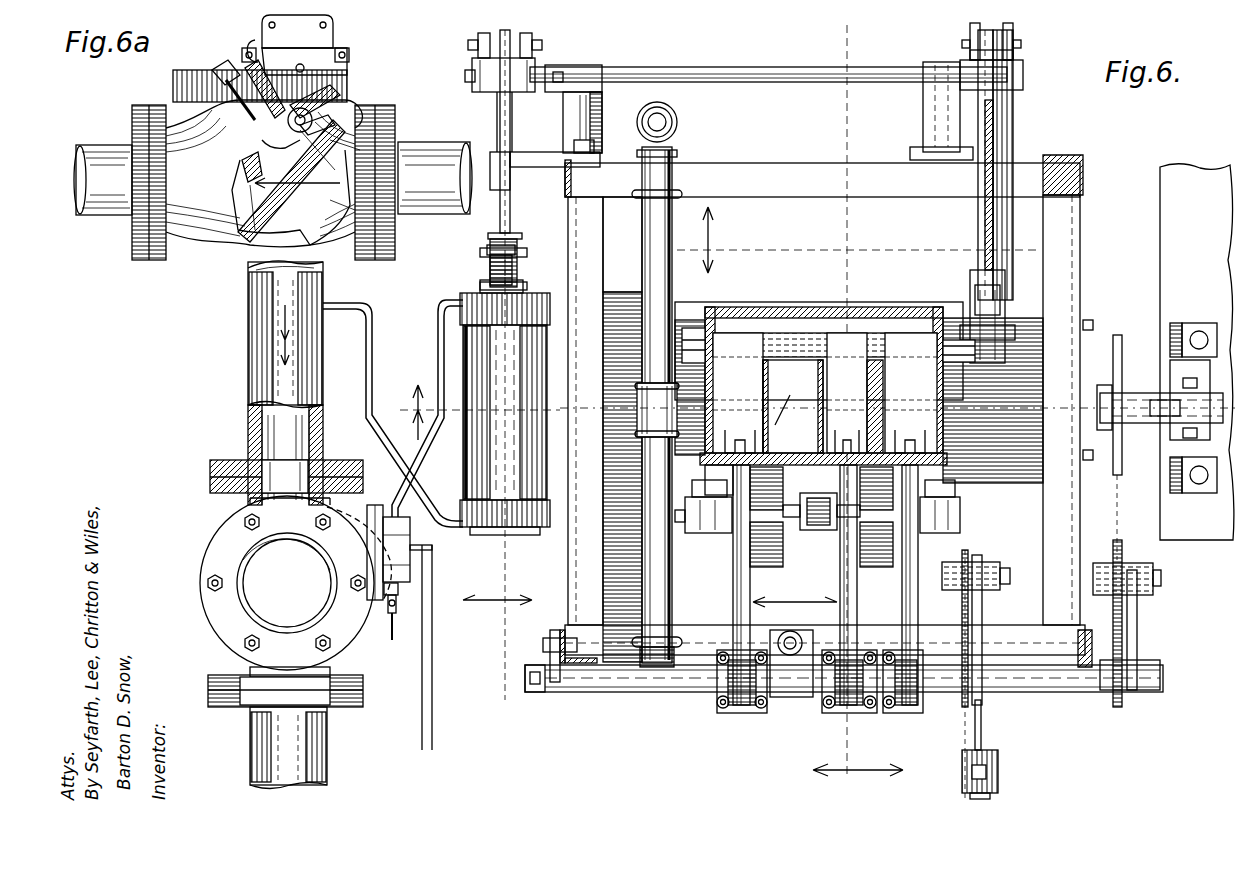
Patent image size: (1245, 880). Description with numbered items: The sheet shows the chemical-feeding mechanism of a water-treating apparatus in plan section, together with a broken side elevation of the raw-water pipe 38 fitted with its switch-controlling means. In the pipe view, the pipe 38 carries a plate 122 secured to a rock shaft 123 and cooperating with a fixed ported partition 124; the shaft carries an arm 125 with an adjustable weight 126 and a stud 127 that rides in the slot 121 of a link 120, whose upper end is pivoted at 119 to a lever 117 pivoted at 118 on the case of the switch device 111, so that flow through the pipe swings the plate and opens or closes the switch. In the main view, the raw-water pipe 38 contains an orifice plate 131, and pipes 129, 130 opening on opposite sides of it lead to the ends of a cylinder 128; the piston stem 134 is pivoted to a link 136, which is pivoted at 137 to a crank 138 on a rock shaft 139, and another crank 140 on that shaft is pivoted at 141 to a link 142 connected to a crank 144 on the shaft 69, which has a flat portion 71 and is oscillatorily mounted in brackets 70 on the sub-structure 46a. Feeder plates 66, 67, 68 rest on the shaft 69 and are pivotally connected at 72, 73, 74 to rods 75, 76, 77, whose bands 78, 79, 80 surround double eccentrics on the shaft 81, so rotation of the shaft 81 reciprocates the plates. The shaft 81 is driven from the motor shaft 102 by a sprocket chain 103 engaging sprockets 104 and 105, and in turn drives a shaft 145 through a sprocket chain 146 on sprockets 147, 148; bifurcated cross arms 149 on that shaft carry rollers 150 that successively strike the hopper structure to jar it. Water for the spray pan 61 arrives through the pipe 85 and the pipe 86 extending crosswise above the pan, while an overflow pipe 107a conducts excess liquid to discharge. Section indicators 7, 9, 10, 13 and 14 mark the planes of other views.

In FIG. 6a, the pipe 38 is at (428, 152).
In FIG. 6, the pipe 38 is at (262, 386).
In FIG. 6a, the lever 117 is at (304, 57).
In FIG. 6a, the pivot 118 is at (299, 43).
In FIG. 6a, the pivot 119 is at (255, 40).
In FIG. 6a, the link 120 is at (248, 68).
In FIG. 6a, the switch device 111 is at (349, 58).
In FIG. 6, the switch device 111 is at (410, 560).
In FIG. 6a, the rock shaft 123 is at (332, 105).
In FIG. 6a, the arm 125 is at (270, 110).
In FIG. 6, the arm 125 is at (392, 640).
In FIG. 6a, the weight 126 is at (222, 100).
In FIG. 6, the weight 126 is at (398, 603).
In FIG. 6a, the stud 127 is at (275, 138).
In FIG. 6a, the slot 121 is at (262, 150).
In FIG. 6a, the plate 122 is at (245, 170).
In FIG. 6a, the fixed ported partition 124 is at (305, 230).
In FIG. 6, the orifice plate 131 is at (225, 460).
In FIG. 6, the section line 13 is at (497, 618).
In FIG. 6, the cylinder 128 is at (480, 440).
In FIG. 6, the section line 7 is at (476, 412).
In FIG. 6, the pipe 130 is at (362, 300).
In FIG. 6, the pipe 129 is at (440, 298).
In FIG. 6, the sub-structure 46a is at (565, 192).
In FIG. 6, the spray pan 61 is at (630, 244).
In FIG. 6, the pipe 86 is at (650, 216).
In FIG. 6, the pipe 85 is at (678, 123).
In FIG. 6, the section line 14 is at (858, 240).
In FIG. 6, the rock shaft 139 is at (790, 60).
In FIG. 6, the stem 134 is at (512, 115).
In FIG. 6, the pivot 137 is at (533, 48).
In FIG. 6, the crank 138 is at (470, 48).
In FIG. 6, the link 136 is at (470, 35).
In FIG. 6, the link 142 is at (985, 125).
In FIG. 6, the crank 140 is at (1020, 60).
In FIG. 6, the pivot 141 is at (962, 48).
In FIG. 6, the overflow pipe 107a is at (998, 240).
In FIG. 6, the crank 144 is at (995, 330).
In FIG. 6, the shaft 69 is at (1000, 378).
In FIG. 6, the flat portion 71 is at (773, 345).
In FIG. 6, the feeder plate 66 is at (738, 393).
In FIG. 6, the feeder plate 67 is at (847, 393).
In FIG. 6, the feeder plate 68 is at (911, 393).
In FIG. 6, the pivotal connection 72 is at (773, 435).
In FIG. 6, the pivotal connection 73 is at (808, 445).
In FIG. 6, the pivotal connection 74 is at (925, 448).
In FIG. 6, the rod 75 is at (733, 604).
In FIG. 6, the rod 76 is at (857, 606).
In FIG. 6, the rod 77 is at (928, 538).
In FIG. 6, the rollers 150 is at (830, 548).
In FIG. 6, the bifurcated cross arms 149 is at (820, 505).
In FIG. 6, the shaft 145 is at (685, 518).
In FIG. 6, the brackets 70 is at (705, 480).
In FIG. 6, the section line 10 is at (795, 611).
In FIG. 6, the shaft 81 is at (667, 692).
In FIG. 6, the band 78 is at (738, 713).
In FIG. 6, the band 79 is at (845, 713).
In FIG. 6, the band 80 is at (910, 713).
In FIG. 6, the section line 9 is at (858, 781).
In FIG. 6, the sprocket chain 146 is at (970, 570).
In FIG. 6, the sprocket 148 is at (960, 562).
In FIG. 6, the sprocket 147 is at (962, 715).
In FIG. 6, the sprocket 105 is at (1122, 705).
In FIG. 6, the motor shaft 102 is at (1175, 393).
In FIG. 6, the sprocket 104 is at (1125, 322).
In FIG. 6, the sprocket chain 103 is at (1120, 548).